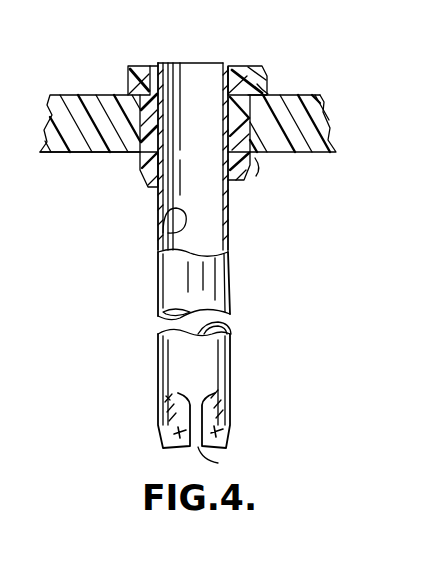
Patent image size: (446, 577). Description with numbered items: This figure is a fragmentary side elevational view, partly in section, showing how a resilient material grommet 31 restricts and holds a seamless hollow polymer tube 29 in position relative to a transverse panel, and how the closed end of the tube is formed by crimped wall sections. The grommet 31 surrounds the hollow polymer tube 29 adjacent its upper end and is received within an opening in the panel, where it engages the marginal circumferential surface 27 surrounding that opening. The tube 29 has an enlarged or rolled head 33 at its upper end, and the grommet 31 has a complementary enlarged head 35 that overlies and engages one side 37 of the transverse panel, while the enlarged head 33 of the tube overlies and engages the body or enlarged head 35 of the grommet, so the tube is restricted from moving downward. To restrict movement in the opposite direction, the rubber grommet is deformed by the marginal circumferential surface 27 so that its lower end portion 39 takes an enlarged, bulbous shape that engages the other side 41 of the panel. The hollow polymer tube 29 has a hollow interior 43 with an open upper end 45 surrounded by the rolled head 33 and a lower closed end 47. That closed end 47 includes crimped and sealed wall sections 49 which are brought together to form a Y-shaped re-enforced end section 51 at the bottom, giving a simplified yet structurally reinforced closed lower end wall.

The marginal circumferential surface 27 is at (258, 162).
The hollow polymer tube 29 is at (224, 221).
The resilient material grommet 31 is at (146, 56).
The enlarged head 33 is at (248, 70).
The enlarged head of the tube grommet 35 is at (262, 87).
The one side of the transverse panel 37 is at (74, 95).
The lower end portion of the tubular grommet 39 is at (138, 168).
The other side of the transverse panel 41 is at (78, 152).
The hollow interior 43 is at (170, 233).
The open upper end 45 is at (190, 62).
The lower closed end 47 is at (148, 428).
The crimped and sealed wall sections 49 is at (168, 440).
The Y-shaped re-enforced end section 51 is at (218, 463).